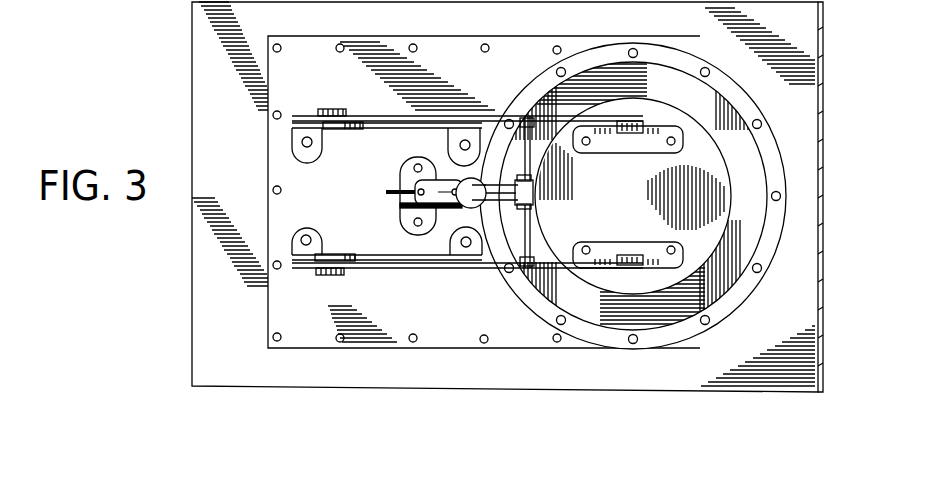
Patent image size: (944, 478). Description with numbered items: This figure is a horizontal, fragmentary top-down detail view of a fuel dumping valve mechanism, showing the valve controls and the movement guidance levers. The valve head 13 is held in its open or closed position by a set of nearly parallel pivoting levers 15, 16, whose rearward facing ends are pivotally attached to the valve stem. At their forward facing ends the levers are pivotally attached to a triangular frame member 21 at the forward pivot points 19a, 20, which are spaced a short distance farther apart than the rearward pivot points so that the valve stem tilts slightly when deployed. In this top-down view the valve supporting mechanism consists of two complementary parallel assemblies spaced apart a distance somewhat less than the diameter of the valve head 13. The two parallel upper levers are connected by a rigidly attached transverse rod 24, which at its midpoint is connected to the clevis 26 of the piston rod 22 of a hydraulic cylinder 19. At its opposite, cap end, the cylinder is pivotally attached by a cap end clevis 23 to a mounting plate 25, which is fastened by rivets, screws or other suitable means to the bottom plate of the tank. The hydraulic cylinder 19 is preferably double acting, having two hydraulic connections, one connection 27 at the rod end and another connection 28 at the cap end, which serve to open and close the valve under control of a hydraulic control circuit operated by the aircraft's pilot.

The valve head 13 is at (646, 208).
The pivoting lever 15 is at (453, 269).
The pivoting lever 16 is at (628, 194).
The hydraulic cylinder 19 is at (447, 213).
The forward pivot point 19a is at (336, 116).
The forward pivot point 20 is at (332, 112).
The triangular frame member 21 is at (392, 127).
The piston rod 22 is at (500, 199).
The cap end clevis 23 is at (400, 210).
The transverse rod 24 is at (533, 234).
The mounting plate 25 is at (402, 228).
The clevis 26 is at (537, 207).
The hydraulic connection 27 is at (450, 180).
The hydraulic connection 28 is at (387, 192).